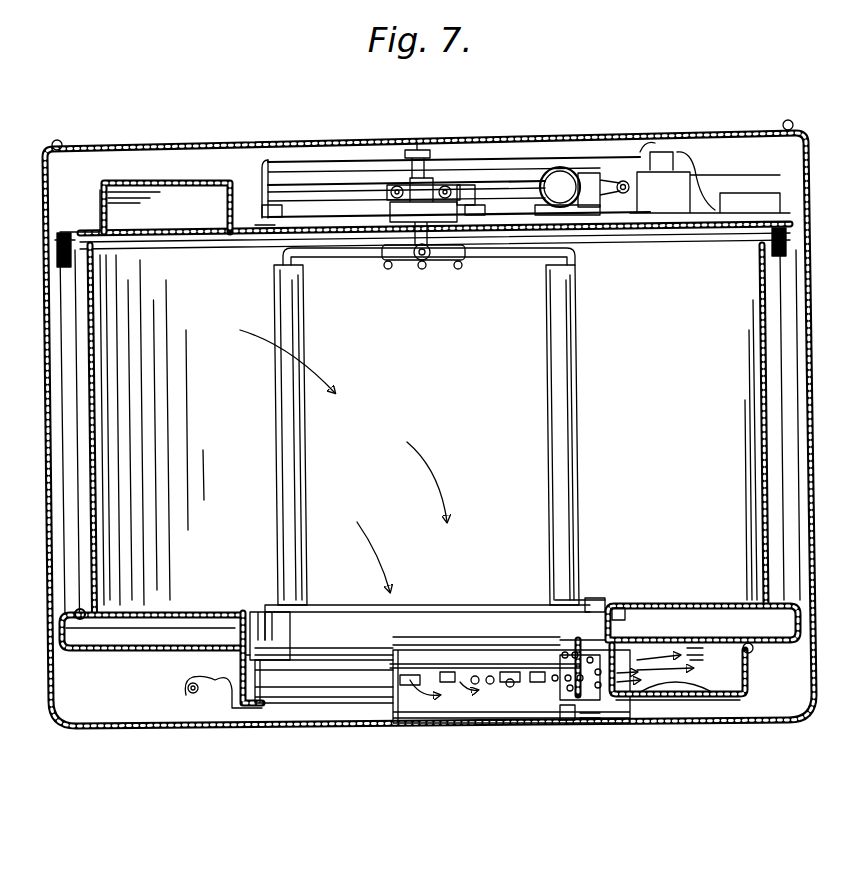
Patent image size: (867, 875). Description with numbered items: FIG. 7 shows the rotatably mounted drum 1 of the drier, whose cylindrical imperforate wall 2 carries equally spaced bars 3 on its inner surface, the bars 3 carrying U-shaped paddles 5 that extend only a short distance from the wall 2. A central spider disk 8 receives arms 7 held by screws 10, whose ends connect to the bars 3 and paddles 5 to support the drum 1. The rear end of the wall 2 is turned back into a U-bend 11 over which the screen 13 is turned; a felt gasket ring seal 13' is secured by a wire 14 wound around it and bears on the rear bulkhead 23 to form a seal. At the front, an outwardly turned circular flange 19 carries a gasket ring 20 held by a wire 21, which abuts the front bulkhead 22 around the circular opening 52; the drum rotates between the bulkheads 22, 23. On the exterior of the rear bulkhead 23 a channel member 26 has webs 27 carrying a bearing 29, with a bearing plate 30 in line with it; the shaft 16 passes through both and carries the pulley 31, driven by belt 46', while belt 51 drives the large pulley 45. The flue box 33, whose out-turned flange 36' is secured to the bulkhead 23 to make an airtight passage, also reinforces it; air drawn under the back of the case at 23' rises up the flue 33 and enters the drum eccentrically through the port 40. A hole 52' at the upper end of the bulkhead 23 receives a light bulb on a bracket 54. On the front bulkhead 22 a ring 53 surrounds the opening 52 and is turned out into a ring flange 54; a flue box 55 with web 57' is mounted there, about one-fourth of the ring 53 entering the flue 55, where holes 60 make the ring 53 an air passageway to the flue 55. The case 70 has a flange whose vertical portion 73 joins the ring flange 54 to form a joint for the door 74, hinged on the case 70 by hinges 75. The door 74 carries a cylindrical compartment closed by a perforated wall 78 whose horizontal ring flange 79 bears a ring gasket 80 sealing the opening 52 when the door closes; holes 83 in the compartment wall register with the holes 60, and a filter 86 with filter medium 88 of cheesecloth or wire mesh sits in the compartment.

The drum 1 is at (411, 360).
The cylindrical imperforate wall 2 is at (93, 325).
The bars 3 is at (420, 113).
The U-shaped paddles 5 is at (287, 421).
The arms 7 is at (322, 258).
The spider disk 8 is at (405, 266).
The screws 10 is at (457, 268).
The U-bend 11 is at (78, 279).
The screen 13 is at (435, 254).
The felt gasket ring seal 13' is at (422, 195).
The wire 14 is at (64, 256).
The shaft 16 is at (423, 147).
The circular flange 19 is at (272, 608).
The gasket ring 20 is at (618, 604).
The wire 21 is at (623, 610).
The front bulkhead 22 is at (152, 640).
The rear bulkhead 23 is at (252, 170).
The back of the case 23' is at (701, 157).
The channel member 26 is at (367, 222).
The webs 27 is at (473, 207).
The bearing 29 is at (433, 190).
The bearing plate 30 is at (463, 200).
The pulley 31 is at (343, 157).
The flue box 33 is at (195, 197).
The cover 36' is at (127, 173).
The port 40 is at (168, 276).
The large pulley 45 is at (300, 197).
The belt 46' is at (406, 159).
The belt 51 is at (263, 190).
The circular opening 52 is at (427, 630).
The motor base 52' is at (580, 258).
The ring 53 is at (560, 170).
The ring flange 54 is at (240, 690).
The flue box 55 is at (720, 673).
The web 57' is at (772, 650).
The holes 60 is at (577, 690).
The case 70 is at (140, 727).
The vertical ring flange portion 73 is at (693, 682).
The door 74 is at (407, 723).
The hinges 75 is at (191, 686).
The perforated wall 78 is at (440, 662).
The horizontal ring flange 79 is at (288, 660).
The ring gasket 80 is at (277, 673).
The holes 83 is at (567, 720).
The filter 86 is at (510, 683).
The filter medium 88 is at (480, 690).